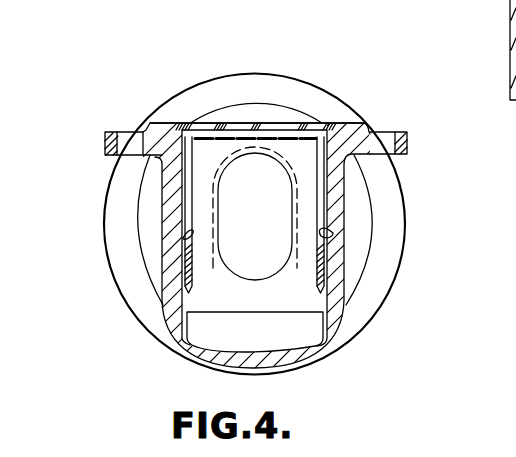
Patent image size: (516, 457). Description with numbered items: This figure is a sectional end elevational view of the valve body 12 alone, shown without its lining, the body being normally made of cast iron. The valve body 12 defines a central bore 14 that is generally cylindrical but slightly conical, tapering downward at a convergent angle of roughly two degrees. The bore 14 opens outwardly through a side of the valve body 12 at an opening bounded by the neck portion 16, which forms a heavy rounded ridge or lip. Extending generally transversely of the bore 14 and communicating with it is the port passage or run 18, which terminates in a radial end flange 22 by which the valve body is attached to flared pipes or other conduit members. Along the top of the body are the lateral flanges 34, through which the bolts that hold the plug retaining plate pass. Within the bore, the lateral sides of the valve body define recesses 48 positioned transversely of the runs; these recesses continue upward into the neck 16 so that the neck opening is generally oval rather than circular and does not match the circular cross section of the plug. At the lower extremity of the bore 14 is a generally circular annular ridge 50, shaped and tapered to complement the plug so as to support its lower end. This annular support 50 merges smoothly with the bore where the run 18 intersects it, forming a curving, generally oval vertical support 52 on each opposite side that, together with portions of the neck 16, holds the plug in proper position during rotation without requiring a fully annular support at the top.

The valve body 12 is at (369, 115).
The central bore 14 is at (200, 156).
The neck portion 16 is at (323, 128).
The port passage or run 18 is at (244, 218).
The radial end flange 22 is at (133, 283).
The lateral flanges 34 is at (112, 131).
The recesses 48 is at (183, 238).
The annular ridge 50 is at (317, 300).
The vertical support 52 is at (249, 147).